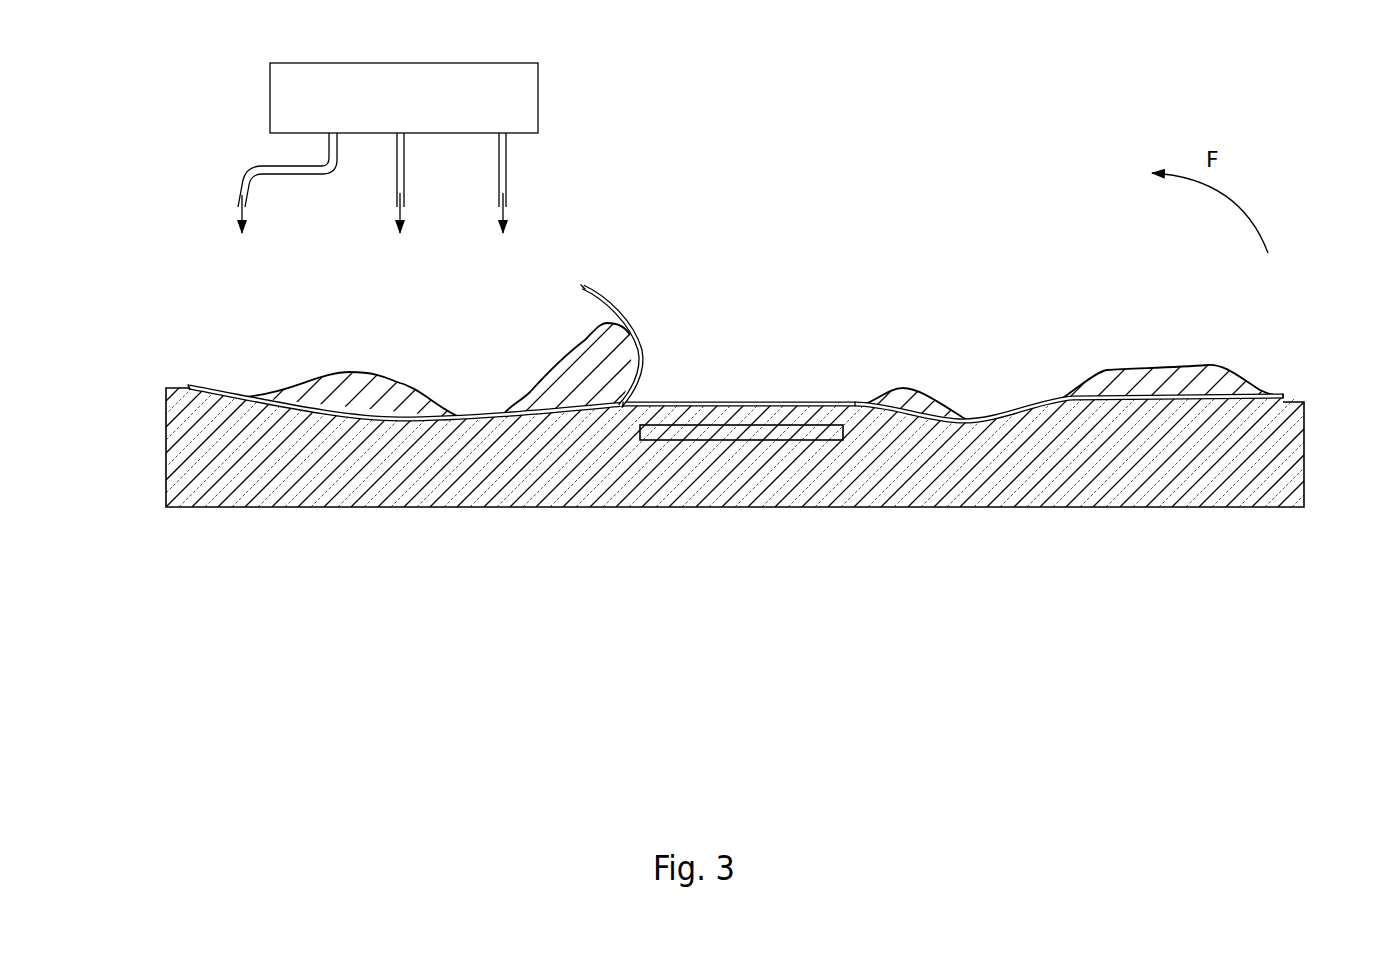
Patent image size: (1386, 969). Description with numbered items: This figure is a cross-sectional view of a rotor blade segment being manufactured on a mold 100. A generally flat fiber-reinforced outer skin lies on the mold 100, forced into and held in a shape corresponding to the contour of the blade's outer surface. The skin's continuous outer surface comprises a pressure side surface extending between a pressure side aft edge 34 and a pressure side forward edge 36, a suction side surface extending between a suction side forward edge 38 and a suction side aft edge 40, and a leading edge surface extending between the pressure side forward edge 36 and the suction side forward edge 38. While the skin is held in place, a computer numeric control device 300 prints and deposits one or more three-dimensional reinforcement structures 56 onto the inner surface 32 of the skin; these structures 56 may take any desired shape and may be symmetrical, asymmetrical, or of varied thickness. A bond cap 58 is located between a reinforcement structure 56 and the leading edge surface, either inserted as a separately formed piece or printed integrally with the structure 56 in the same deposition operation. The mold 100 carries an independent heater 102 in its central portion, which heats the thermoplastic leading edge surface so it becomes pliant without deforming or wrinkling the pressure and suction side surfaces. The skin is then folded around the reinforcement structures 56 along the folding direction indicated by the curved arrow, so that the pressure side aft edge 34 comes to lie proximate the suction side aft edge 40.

The inner surface 32 is at (855, 390).
The pressure side aft edge 34 is at (1285, 403).
The pressure side forward edge 36 is at (855, 413).
The suction side forward edge 38 is at (622, 408).
The suction side aft edge 40 is at (166, 399).
The three-dimensional reinforcement structure 56 is at (354, 385).
The bond cap 58 is at (620, 306).
The mold 100 is at (1250, 487).
The independent heater 102 is at (750, 433).
The computer numeric control device 300 is at (427, 108).